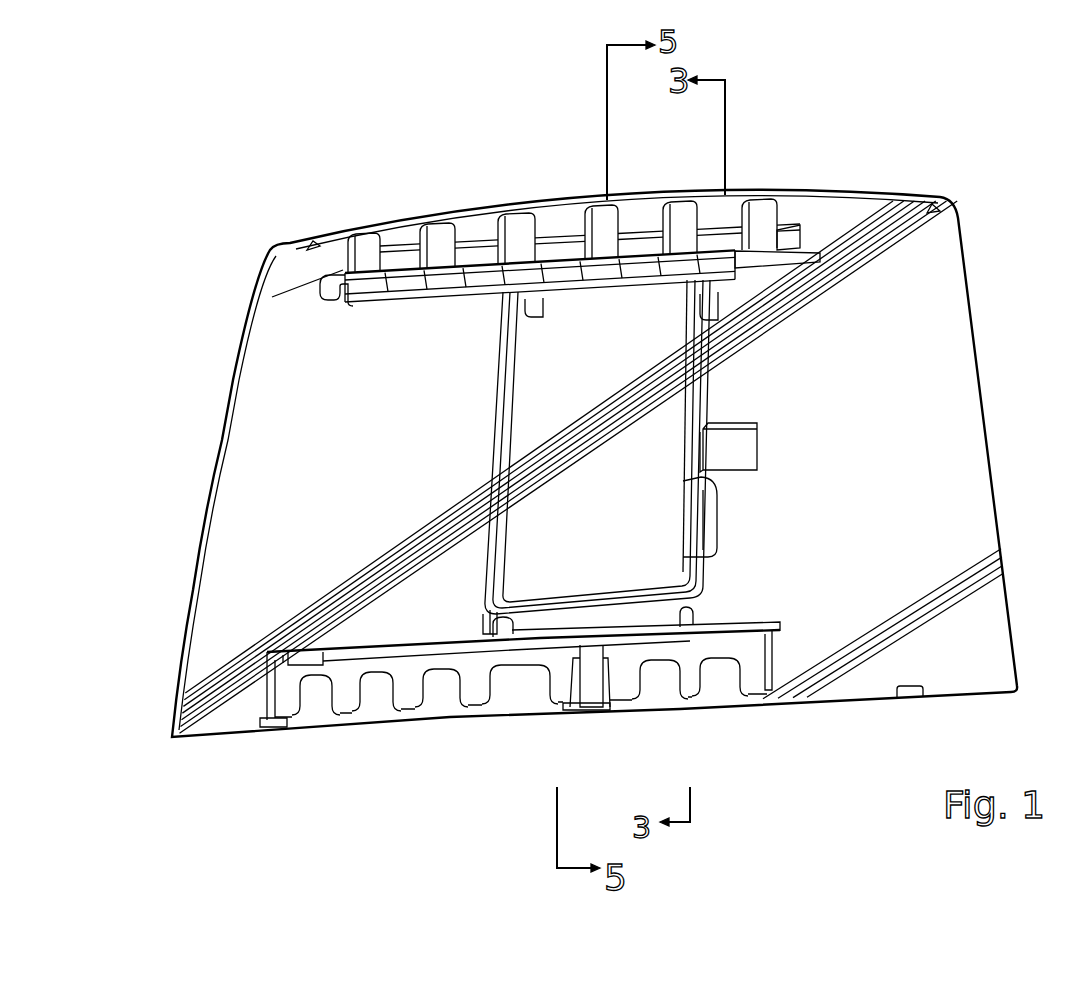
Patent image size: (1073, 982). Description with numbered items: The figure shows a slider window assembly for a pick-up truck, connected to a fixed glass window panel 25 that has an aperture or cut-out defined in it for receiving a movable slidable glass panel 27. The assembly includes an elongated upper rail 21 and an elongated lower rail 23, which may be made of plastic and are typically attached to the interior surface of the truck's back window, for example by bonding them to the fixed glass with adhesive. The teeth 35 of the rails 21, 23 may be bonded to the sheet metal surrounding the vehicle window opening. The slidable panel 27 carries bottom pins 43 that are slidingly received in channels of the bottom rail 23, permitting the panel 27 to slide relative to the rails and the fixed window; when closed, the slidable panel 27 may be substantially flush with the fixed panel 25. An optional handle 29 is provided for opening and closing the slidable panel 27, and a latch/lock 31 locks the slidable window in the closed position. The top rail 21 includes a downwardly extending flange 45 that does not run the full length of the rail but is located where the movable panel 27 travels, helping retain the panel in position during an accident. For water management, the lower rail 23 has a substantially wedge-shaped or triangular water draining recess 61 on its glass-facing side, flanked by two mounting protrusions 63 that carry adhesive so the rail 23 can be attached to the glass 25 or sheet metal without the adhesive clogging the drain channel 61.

The upper rail 21 is at (472, 248).
The lower rail 23 is at (407, 668).
The fixed glass window panel 25 is at (969, 458).
The slidable glass panel 27 is at (642, 441).
The handle 29 is at (700, 523).
The latch/lock 31 is at (748, 443).
The teeth 35 is at (421, 238).
The bottom pins 43 is at (490, 627).
The downwardly extending flange 45 is at (345, 301).
The water draining recess 61 is at (588, 735).
The mounting protrusions 63 is at (573, 711).